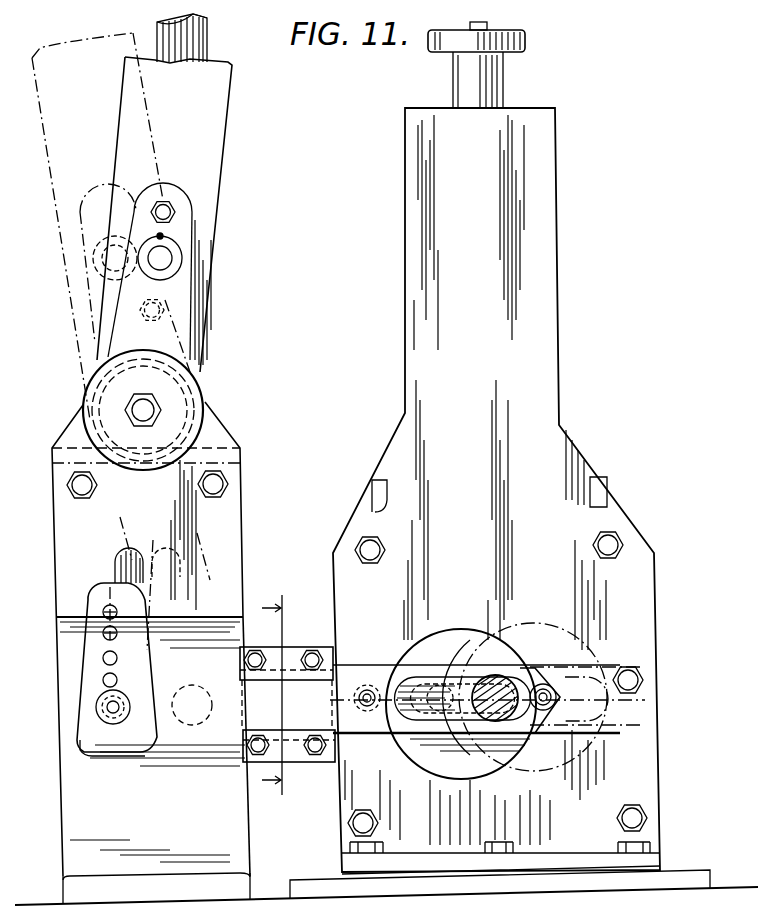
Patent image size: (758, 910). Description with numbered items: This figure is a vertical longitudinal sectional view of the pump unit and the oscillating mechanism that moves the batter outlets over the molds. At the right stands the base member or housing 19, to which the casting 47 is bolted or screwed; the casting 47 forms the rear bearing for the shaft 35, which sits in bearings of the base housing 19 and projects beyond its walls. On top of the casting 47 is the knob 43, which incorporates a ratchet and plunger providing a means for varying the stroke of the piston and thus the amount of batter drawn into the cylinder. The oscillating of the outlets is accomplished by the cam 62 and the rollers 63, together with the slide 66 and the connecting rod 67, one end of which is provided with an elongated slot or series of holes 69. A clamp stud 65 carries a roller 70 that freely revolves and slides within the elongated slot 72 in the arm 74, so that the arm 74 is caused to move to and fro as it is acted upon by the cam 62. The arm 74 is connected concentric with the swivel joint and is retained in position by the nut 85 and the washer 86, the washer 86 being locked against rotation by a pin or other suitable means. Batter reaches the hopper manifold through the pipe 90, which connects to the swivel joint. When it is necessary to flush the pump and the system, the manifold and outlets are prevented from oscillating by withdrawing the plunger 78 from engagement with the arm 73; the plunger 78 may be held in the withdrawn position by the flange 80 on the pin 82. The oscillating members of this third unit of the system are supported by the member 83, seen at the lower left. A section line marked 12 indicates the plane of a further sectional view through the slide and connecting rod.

The section line 12- 12 is at (270, 695).
The base member or housing 19 is at (660, 772).
The shaft 35 is at (505, 715).
The knob 43 is at (525, 42).
The casting 47 is at (559, 236).
The cam 62 is at (460, 628).
The rollers 63 is at (368, 684).
The clamp stud 65 is at (117, 740).
The slide 66 is at (298, 652).
The connecting rod 67 is at (345, 762).
The elongated slot or series of holes 69 is at (105, 680).
The roller 70 is at (102, 706).
The elongated slot 72 is at (118, 570).
The arm 73 is at (215, 193).
The arm 74 is at (100, 466).
The plunger 78 is at (160, 262).
The flange 80 is at (176, 272).
The pin 82 is at (163, 237).
The member 83 is at (70, 815).
The nut 85 is at (143, 410).
The washer 86 is at (200, 380).
The pipe 90 is at (207, 40).